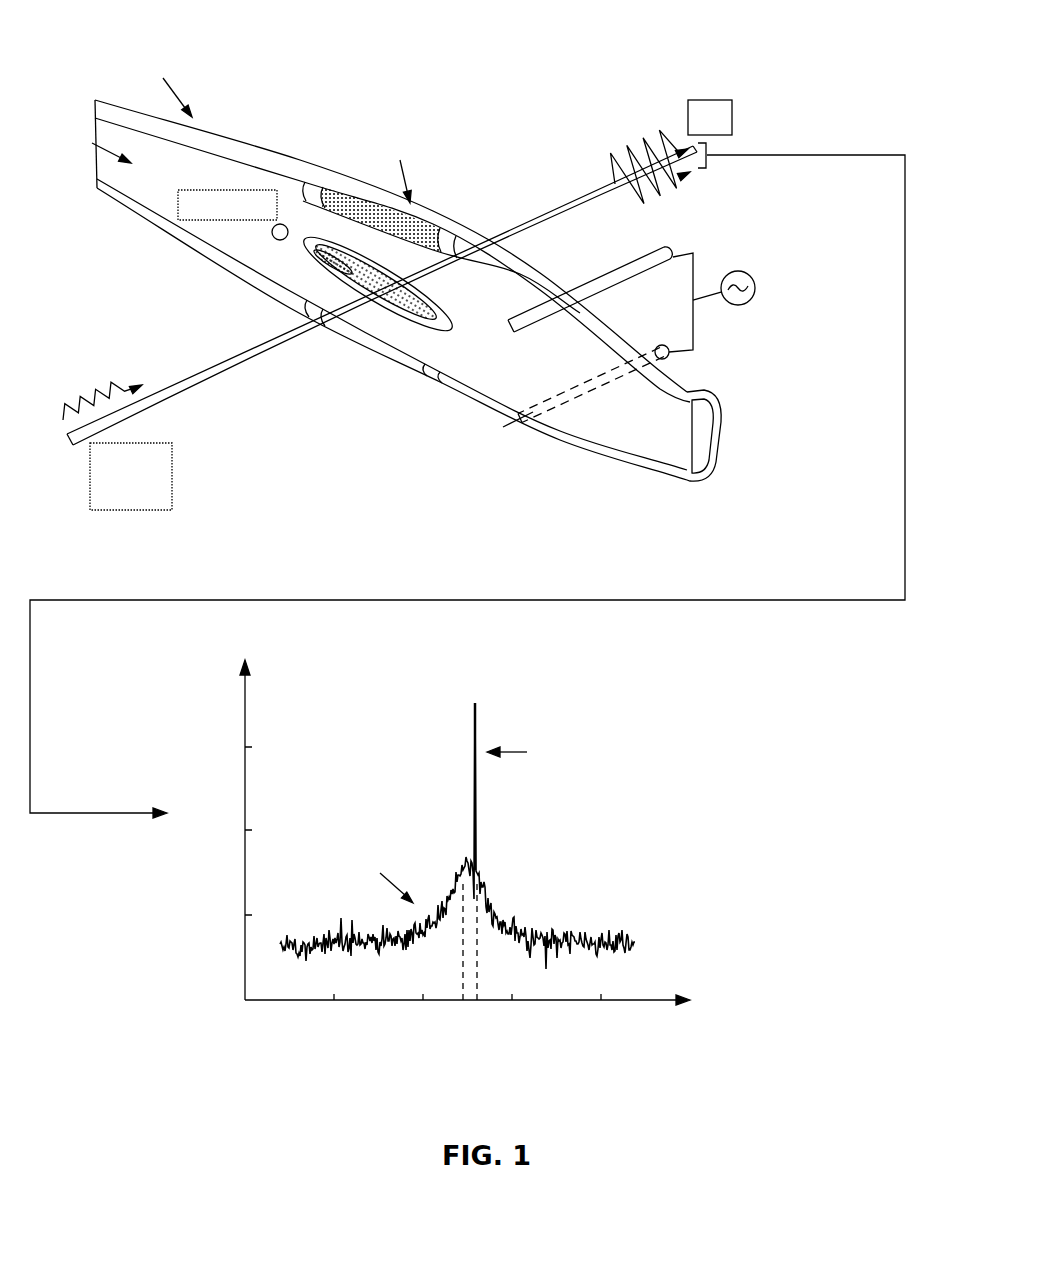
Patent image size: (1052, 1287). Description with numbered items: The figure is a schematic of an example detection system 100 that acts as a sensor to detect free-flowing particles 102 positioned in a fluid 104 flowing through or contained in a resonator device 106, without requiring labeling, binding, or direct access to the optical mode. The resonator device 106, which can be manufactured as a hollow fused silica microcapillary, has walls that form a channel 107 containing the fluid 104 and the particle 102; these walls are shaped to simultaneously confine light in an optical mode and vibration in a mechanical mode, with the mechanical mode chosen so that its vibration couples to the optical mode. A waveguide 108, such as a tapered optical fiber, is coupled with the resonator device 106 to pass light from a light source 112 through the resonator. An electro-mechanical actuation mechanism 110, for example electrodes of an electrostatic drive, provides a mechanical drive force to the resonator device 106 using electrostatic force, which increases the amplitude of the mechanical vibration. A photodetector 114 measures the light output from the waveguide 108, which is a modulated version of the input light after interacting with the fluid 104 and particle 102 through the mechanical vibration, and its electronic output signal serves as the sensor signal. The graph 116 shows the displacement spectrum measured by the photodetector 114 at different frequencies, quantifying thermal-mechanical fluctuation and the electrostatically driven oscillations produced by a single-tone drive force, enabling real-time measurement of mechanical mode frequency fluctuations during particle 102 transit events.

The detection system 100 is at (270, 62).
The particle 102 is at (277, 240).
The fluid 104 is at (160, 182).
The resonator device 106 is at (428, 224).
The channel 107 is at (405, 305).
The waveguide 108 is at (175, 398).
The electro-mechanical actuation mechanism 110 is at (787, 467).
The light source 112 is at (128, 510).
The photodetector 114 is at (712, 100).
The graph 116 is at (463, 669).